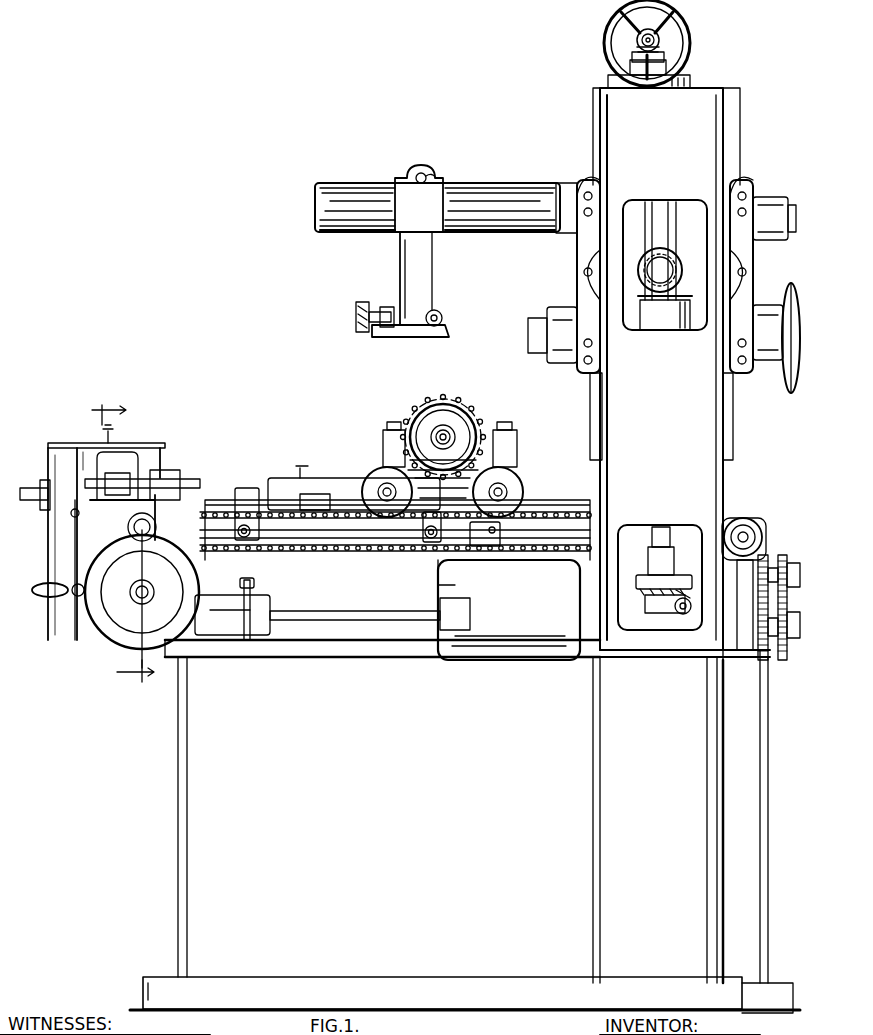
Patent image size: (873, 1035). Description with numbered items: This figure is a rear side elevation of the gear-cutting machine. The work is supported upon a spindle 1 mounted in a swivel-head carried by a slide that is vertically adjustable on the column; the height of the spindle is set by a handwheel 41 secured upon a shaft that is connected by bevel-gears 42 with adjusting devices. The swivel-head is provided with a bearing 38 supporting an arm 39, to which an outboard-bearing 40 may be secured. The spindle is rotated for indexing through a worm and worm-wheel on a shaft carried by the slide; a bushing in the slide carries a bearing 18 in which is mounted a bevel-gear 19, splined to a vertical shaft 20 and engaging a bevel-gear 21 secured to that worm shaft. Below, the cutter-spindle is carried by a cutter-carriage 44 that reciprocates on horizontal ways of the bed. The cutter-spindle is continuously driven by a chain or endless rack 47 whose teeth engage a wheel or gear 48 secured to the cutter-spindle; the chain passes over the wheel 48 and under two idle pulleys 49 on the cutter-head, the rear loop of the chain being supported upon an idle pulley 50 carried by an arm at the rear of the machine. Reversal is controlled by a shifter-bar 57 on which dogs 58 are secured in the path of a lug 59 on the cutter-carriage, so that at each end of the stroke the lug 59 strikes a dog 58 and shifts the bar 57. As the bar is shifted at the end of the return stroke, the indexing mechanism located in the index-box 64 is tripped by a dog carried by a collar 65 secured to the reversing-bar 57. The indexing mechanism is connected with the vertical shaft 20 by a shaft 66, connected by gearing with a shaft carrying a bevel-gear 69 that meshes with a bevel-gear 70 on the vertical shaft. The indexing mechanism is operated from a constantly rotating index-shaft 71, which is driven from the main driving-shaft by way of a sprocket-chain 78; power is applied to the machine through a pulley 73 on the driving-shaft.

The spindle 1 is at (530, 318).
The bearing 18 is at (662, 322).
The bevel-gear 19 is at (683, 322).
The vertical shaft 20 is at (674, 205).
The bevel-gear 21 is at (650, 200).
The bearing 38 is at (561, 183).
The arm 39 is at (488, 195).
The outboard-bearing 40 is at (437, 280).
The handwheel 41 is at (688, 22).
The bevel-gears 42 is at (660, 45).
The cutter-carriage 44 is at (292, 477).
The chain or endless rack 47 is at (468, 410).
The wheel or gear 48 is at (433, 405).
The idle pulleys 49 is at (380, 470).
The idle pulley 50 is at (758, 528).
The shifter-bar 57 is at (370, 540).
The dogs 58 is at (246, 488).
The lug 59 is at (311, 506).
The index-box 64 is at (509, 610).
The collar 65 is at (488, 548).
The shaft 66 is at (655, 635).
The bevel-gear 69 is at (683, 640).
The bevel-gear 70 is at (646, 580).
The index-shaft 71 is at (335, 612).
The pulley 73 is at (110, 638).
The sprocket-chain 78 is at (254, 600).